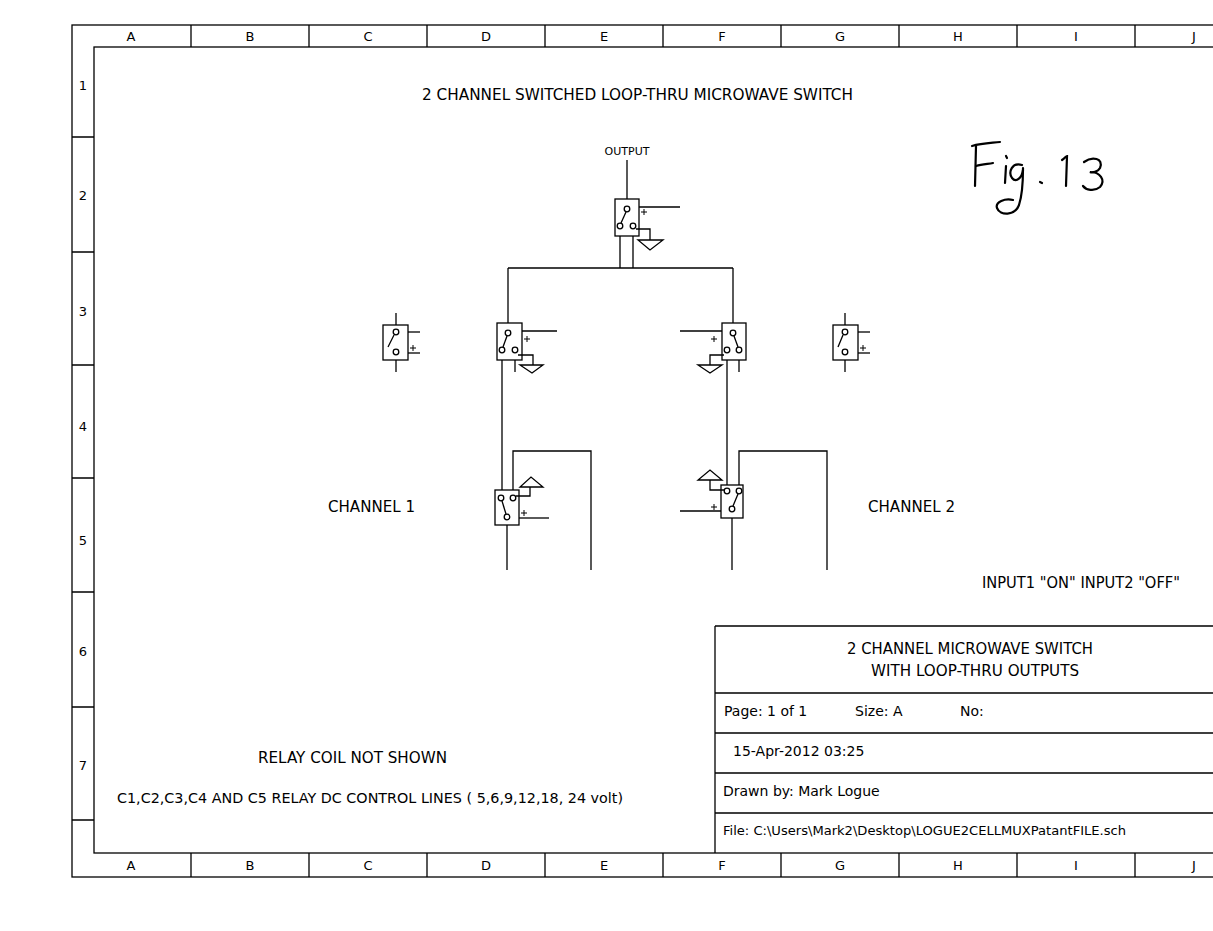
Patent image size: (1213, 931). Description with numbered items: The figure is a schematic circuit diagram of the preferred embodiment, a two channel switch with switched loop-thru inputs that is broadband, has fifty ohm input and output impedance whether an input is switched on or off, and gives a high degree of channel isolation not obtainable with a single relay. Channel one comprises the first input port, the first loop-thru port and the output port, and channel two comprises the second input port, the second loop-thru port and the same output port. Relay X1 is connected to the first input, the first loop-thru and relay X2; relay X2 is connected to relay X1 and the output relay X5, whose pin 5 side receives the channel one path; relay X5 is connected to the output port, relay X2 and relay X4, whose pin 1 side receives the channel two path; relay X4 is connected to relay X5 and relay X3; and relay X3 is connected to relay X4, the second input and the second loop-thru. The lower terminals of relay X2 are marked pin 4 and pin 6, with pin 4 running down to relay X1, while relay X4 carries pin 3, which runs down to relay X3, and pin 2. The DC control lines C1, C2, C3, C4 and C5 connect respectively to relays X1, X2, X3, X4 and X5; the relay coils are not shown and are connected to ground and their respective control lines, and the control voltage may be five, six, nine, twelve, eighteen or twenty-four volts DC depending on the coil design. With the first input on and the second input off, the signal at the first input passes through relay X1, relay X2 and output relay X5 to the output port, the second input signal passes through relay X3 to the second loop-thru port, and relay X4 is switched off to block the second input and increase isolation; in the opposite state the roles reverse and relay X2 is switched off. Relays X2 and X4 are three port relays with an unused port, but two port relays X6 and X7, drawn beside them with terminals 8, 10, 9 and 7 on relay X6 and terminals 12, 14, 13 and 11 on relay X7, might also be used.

The relay X4 pin 1 (to output relay X5) 1 is at (740, 295).
The relay X4 pin 2 is at (744, 373).
The relay X4 pin 3 (to relay X3) 3 is at (731, 422).
The relay X2 pin 4 (to relay X1) 4 is at (507, 425).
The relay X2 pin 5 (to output relay X5) 5 is at (513, 295).
The relay X2 pin 6 is at (520, 372).
The switch X6 pin 7 is at (400, 373).
The switch X6 pin 8 is at (401, 316).
The switch X6 pin 9 is at (418, 359).
The switch X6 pin 10 is at (422, 336).
The switch X7 pin 11 is at (853, 373).
The switch X7 pin 12 is at (854, 316).
The switch X7 pin 13 is at (872, 359).
The switch X7 pin 14 is at (872, 336).
The relay X1 is at (547, 522).
The relay X2 is at (507, 344).
The relay X3 is at (778, 522).
The relay X4 is at (736, 344).
The output relay X5 is at (626, 230).
The two port relay X6 is at (385, 342).
The two port relay X7 is at (835, 342).
The DC control line C1 is at (544, 518).
The DC control line C2 is at (550, 331).
The DC control line C3 is at (688, 511).
The DC control line C4 is at (689, 331).
The DC control line C5 is at (670, 207).